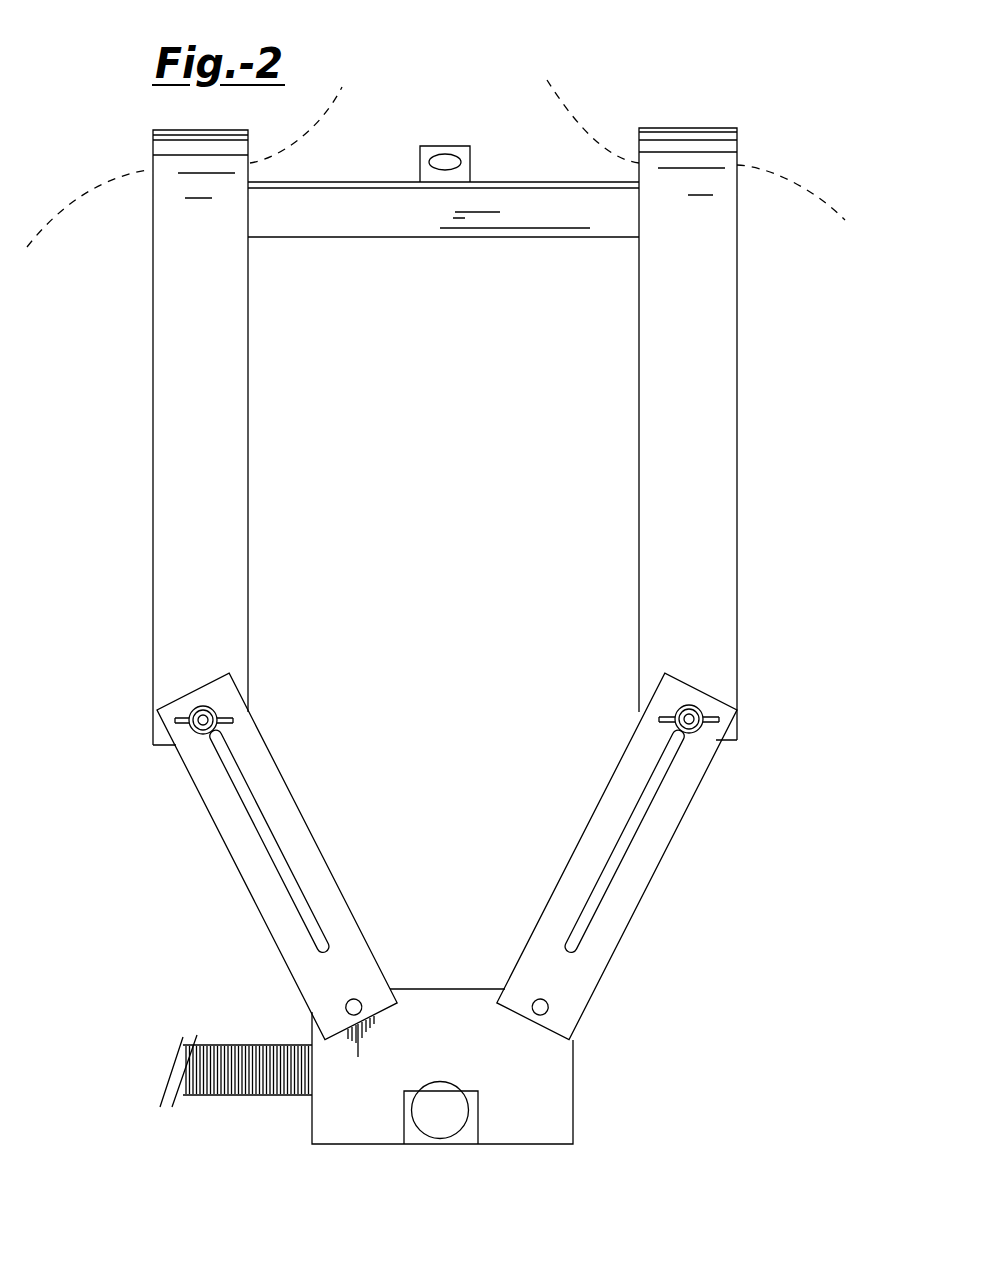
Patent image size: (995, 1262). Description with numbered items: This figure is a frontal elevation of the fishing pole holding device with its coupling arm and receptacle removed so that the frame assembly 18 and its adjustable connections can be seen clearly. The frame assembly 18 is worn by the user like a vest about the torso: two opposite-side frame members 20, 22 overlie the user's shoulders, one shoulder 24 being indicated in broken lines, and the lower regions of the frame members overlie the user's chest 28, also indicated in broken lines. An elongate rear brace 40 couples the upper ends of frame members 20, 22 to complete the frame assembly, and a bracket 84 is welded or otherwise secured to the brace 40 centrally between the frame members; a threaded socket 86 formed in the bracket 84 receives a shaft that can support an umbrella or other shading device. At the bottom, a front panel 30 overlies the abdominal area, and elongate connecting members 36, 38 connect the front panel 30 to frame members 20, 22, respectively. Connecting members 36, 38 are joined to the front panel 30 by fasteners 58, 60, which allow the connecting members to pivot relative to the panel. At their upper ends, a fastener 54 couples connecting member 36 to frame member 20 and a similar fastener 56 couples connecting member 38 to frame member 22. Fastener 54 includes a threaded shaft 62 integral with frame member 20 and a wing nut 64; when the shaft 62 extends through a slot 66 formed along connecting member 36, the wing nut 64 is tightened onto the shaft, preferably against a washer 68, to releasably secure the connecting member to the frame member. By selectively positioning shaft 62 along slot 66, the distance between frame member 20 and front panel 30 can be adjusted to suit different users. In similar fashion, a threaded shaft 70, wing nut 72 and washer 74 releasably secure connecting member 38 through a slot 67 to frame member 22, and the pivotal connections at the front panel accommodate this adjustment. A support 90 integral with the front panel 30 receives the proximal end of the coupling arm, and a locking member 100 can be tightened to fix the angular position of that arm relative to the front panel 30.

The frame assembly 18 is at (750, 482).
The frame member 20 is at (153, 366).
The frame member 22 is at (737, 302).
The shoulder 24 is at (112, 180).
The chest 28 is at (760, 168).
The front panel 30 is at (437, 993).
The connecting member 36 is at (260, 917).
The connecting member 38 is at (620, 947).
The rear brace 40 is at (330, 182).
The fastener 54 is at (203, 706).
The fastener 56 is at (702, 708).
The fastener 58 is at (348, 1000).
The fastener 60 is at (549, 1003).
The threaded shaft 62 is at (216, 714).
The wing nut 64 is at (180, 740).
The slot 66 is at (255, 813).
The slot 67 is at (640, 822).
The washer 68 is at (192, 711).
The threaded shaft 70 is at (689, 705).
The wing nut 72 is at (712, 724).
The washer 74 is at (676, 713).
The bracket 84 is at (428, 146).
The threaded socket 86 is at (447, 153).
The support 90 is at (478, 1127).
The locking member 100 is at (442, 1082).